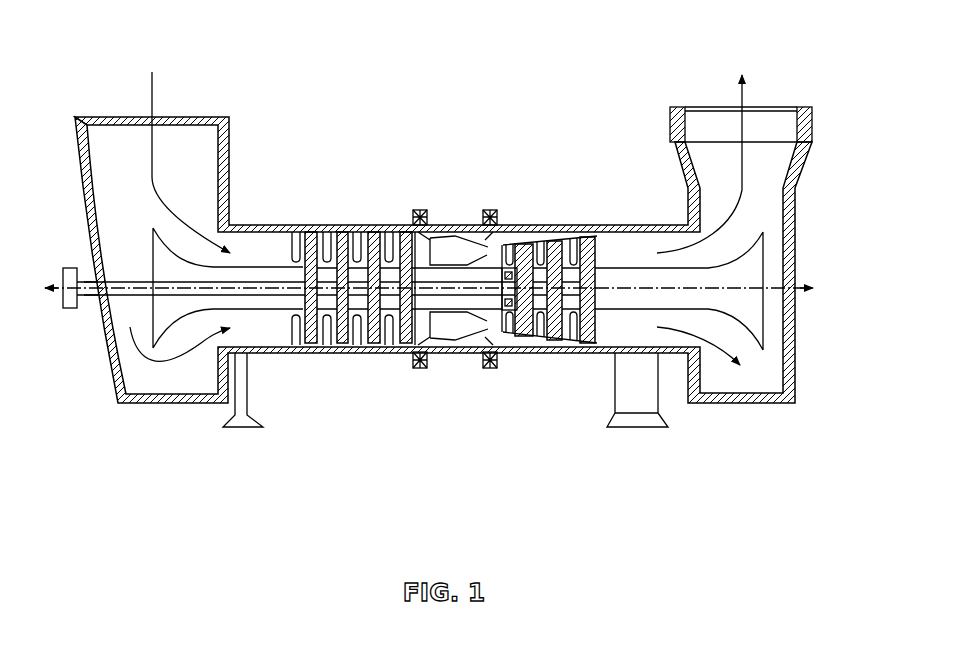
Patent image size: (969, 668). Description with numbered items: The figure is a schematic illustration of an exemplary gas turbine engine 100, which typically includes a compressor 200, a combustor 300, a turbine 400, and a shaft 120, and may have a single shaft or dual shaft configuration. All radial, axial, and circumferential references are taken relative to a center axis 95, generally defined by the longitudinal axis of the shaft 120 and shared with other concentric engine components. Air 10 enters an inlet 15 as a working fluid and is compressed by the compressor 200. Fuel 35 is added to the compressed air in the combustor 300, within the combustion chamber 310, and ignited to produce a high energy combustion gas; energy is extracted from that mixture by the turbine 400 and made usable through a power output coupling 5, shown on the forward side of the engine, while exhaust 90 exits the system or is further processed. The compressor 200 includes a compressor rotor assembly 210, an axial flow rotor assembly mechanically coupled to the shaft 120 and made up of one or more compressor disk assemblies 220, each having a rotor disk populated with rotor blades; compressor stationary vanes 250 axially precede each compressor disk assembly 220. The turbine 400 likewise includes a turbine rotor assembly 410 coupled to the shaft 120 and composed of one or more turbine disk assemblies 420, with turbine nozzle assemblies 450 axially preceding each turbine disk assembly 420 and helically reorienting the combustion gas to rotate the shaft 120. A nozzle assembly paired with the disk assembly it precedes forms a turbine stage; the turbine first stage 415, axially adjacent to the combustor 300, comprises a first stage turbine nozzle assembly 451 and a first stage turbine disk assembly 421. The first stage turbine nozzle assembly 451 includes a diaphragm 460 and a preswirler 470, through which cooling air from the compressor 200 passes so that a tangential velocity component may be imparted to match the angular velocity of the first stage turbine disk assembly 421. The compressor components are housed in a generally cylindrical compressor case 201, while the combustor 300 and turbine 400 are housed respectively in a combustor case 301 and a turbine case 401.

The gas turbine engine 100 is at (122, 11).
The air 10 is at (150, 100).
The inlet 15 is at (236, 122).
The compressor case 201 is at (251, 224).
The power output coupling 5 is at (70, 268).
The center axis 95 is at (90, 303).
The compressor 200 is at (303, 133).
The combustor 300 is at (502, 133).
The turbine 400 is at (593, 133).
The compressor disk assembly 220 is at (305, 232).
The compressor stationary vanes 250 is at (295, 353).
The compressor rotor assembly 210 is at (347, 357).
The combustor case 301 is at (424, 220).
The diaphragm 460 is at (487, 368).
The combustion chamber 310 is at (437, 240).
The shaft 120 is at (430, 285).
The fuel 35 is at (466, 329).
The first stage turbine nozzle assembly 451 is at (503, 262).
The turbine first stage 415 is at (547, 220).
The first stage turbine disk assembly 421 is at (519, 352).
The turbine rotor assembly 410 is at (583, 370).
The turbine disk assembly 420 is at (558, 233).
The turbine nozzle assembly 450 is at (567, 350).
The preswirler 470 is at (520, 343).
The turbine case 401 is at (672, 224).
The exhaust 90 is at (741, 95).